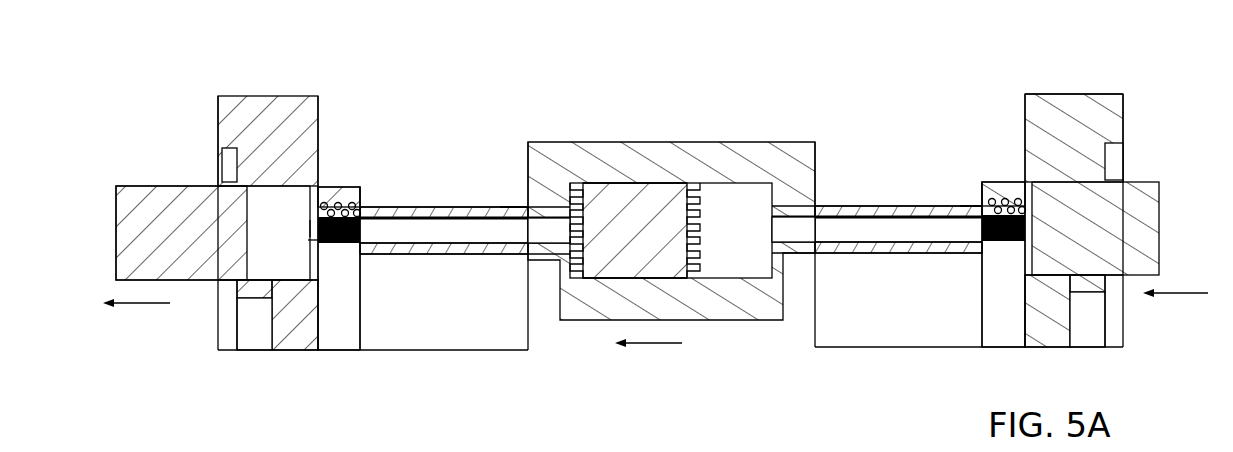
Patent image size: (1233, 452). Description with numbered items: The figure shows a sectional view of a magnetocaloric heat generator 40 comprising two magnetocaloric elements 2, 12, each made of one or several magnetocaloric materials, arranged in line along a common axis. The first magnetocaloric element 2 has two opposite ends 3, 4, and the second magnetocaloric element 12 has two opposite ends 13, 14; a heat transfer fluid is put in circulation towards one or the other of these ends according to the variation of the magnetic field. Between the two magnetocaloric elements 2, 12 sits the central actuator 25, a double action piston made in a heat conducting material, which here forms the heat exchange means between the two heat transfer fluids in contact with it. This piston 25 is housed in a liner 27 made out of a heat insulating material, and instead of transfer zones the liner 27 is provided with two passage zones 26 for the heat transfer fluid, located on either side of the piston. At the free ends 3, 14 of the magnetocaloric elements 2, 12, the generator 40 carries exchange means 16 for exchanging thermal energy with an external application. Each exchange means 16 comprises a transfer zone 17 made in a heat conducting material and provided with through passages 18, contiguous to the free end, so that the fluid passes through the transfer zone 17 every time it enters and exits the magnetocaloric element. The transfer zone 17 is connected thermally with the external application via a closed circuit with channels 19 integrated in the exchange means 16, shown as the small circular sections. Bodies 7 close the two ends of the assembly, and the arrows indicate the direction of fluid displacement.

The heat generator 40 is at (81, 104).
The mass body 7 is at (162, 192).
The channels 19 is at (317, 195).
The end of magnetocaloric element 3 is at (366, 222).
The magnetocaloric element 2 is at (422, 229).
The end of magnetocaloric element 4 is at (513, 206).
The passage zones 26 is at (543, 232).
The liner 27 is at (598, 162).
The central actuator 25 is at (635, 204).
The magnetocaloric element 12 is at (897, 222).
The end of magnetocaloric element 13 is at (828, 220).
The end of magnetocaloric element 14 is at (978, 215).
The exchange means 16 is at (346, 294).
The transfer zone 17 is at (312, 248).
The through passages 18 is at (360, 253).